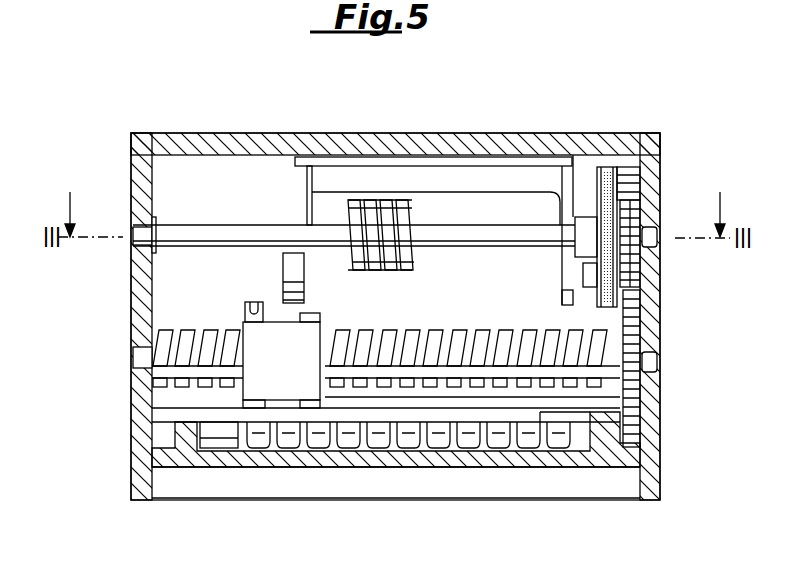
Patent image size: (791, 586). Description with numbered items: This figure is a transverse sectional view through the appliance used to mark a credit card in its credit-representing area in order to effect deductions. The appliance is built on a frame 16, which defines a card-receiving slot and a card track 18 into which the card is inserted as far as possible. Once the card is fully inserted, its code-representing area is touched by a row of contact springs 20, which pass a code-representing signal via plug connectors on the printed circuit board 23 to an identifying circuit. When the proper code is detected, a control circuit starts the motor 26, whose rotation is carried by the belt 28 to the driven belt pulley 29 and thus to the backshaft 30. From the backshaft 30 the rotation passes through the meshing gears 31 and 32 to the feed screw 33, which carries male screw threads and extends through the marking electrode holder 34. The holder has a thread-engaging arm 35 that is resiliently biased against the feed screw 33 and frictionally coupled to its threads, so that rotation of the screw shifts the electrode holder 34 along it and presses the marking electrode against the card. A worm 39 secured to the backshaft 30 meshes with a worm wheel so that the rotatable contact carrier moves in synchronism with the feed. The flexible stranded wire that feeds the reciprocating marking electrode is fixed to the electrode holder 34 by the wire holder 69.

The frame 16 is at (668, 448).
The card track 18 is at (368, 450).
The contact springs 20 is at (290, 448).
The printed circuit board 23 is at (561, 416).
The motor 26 is at (495, 190).
The belt 28 is at (604, 167).
The driven belt pulley 29 is at (631, 176).
The backshaft 30 is at (224, 236).
The gear 31 is at (628, 210).
The gear 32 is at (634, 322).
The feed screw 33 is at (455, 330).
The marking electrode holder 34 is at (296, 373).
The thread-engaging arm 35 is at (220, 330).
The worm 39 is at (380, 268).
The wire holder 69 is at (255, 302).